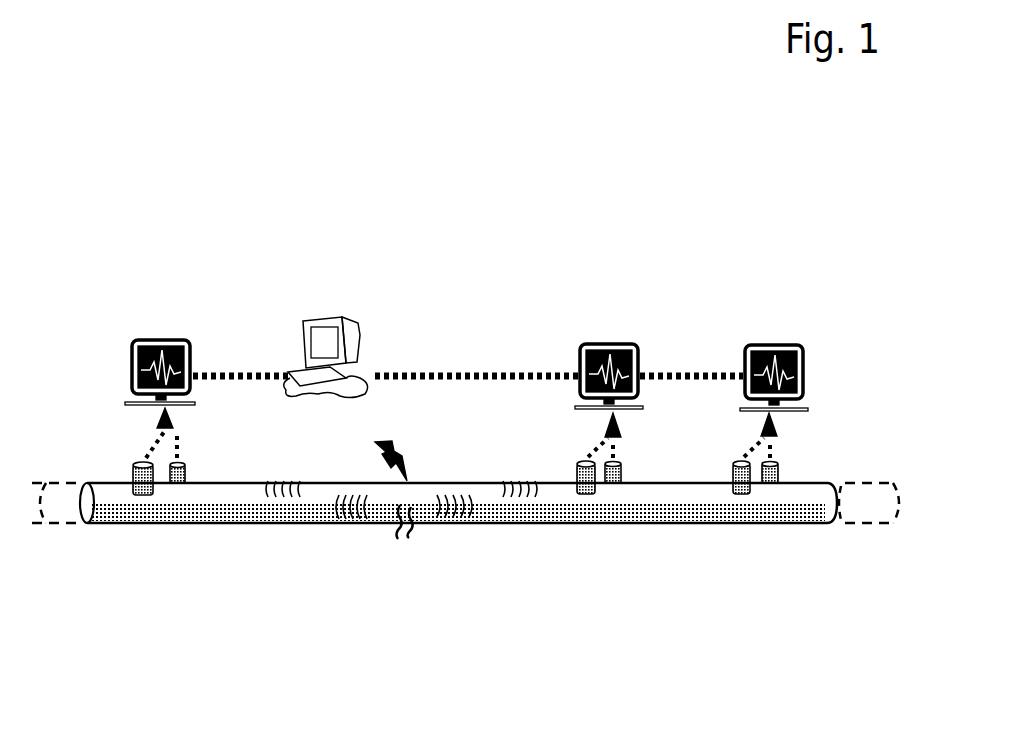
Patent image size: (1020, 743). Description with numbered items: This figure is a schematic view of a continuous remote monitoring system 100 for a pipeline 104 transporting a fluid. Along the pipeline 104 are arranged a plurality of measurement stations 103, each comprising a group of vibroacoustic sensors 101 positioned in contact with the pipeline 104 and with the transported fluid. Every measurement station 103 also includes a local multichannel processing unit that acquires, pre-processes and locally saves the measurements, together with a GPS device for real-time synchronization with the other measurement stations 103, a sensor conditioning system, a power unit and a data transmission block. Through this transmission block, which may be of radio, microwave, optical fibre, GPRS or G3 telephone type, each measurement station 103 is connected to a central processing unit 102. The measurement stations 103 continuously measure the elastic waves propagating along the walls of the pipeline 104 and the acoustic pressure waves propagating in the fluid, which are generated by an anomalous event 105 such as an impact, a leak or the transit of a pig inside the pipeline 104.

The continuous remote monitoring system 100 is at (273, 184).
The vibroacoustic sensors 101 is at (126, 454).
The central processing unit 102 is at (375, 305).
The measurement station 103 is at (178, 315).
The pipeline 104 is at (132, 525).
The anomalous event 105 is at (383, 468).